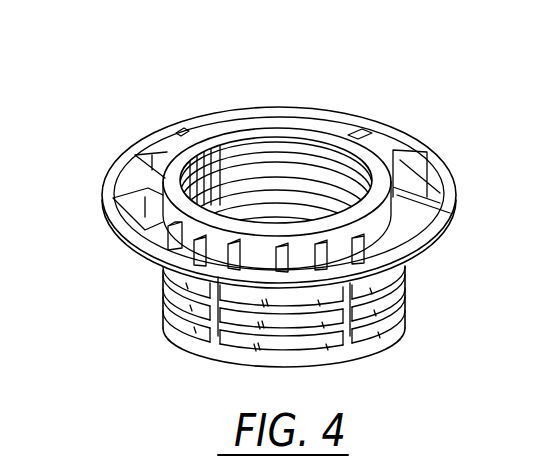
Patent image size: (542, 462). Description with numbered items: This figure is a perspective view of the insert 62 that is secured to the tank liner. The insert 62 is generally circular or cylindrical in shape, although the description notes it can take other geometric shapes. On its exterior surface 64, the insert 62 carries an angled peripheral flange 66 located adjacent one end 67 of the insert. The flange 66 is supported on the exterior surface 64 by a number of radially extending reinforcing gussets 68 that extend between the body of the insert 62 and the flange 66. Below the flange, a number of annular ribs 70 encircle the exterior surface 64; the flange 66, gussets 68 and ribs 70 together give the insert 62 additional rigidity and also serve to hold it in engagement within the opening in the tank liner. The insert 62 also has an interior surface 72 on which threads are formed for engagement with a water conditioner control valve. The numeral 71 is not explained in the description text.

The insert 62 is at (116, 270).
The exterior surface 64 is at (166, 300).
The angled peripheral flange 66 is at (108, 224).
The end 67 is at (257, 113).
The reinforcing gussets 68 is at (127, 216).
The annular ribs 70 is at (188, 324).
The bottom edge 71 is at (250, 360).
The interior surface 72 is at (276, 148).